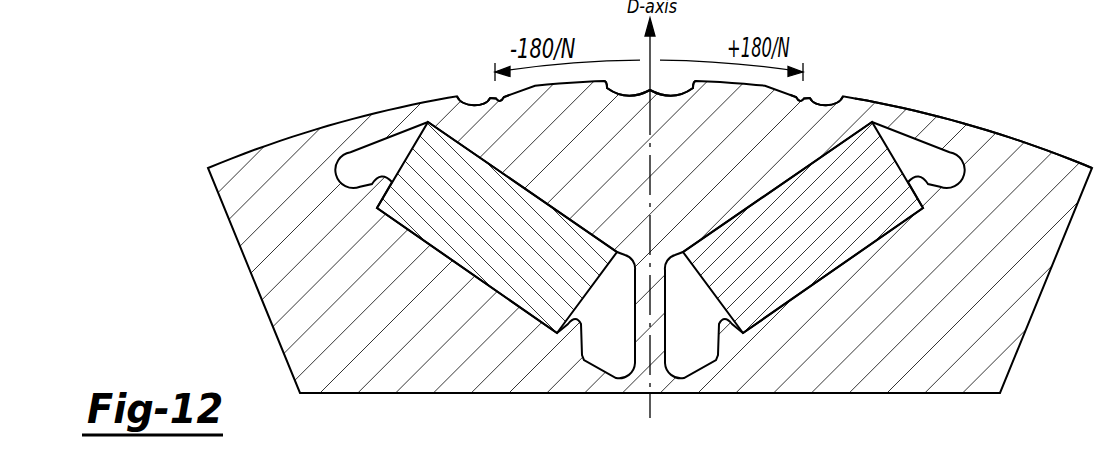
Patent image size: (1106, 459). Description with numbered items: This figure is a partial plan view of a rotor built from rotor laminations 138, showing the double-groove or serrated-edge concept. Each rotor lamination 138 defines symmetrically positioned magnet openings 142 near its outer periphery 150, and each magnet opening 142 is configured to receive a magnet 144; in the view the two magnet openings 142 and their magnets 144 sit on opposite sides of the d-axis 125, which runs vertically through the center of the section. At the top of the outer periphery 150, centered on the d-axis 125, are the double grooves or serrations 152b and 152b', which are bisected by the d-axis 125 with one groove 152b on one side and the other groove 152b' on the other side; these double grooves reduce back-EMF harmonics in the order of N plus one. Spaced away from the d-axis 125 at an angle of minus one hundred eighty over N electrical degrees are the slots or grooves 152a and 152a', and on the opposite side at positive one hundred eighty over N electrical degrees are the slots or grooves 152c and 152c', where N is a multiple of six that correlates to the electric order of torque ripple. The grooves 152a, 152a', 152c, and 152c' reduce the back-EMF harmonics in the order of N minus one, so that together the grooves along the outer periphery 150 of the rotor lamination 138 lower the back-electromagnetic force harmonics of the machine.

The d-axis 125 is at (650, 404).
The rotor lamination 138 is at (280, 266).
The magnet opening 142 is at (524, 313).
The magnet 144 is at (442, 240).
The outer periphery 150 is at (977, 128).
The groove 152a is at (438, 72).
The groove 152a' is at (478, 67).
The groove 152b is at (610, 49).
The groove 152b' is at (691, 49).
The groove 152c is at (821, 65).
The groove 152c' is at (863, 72).